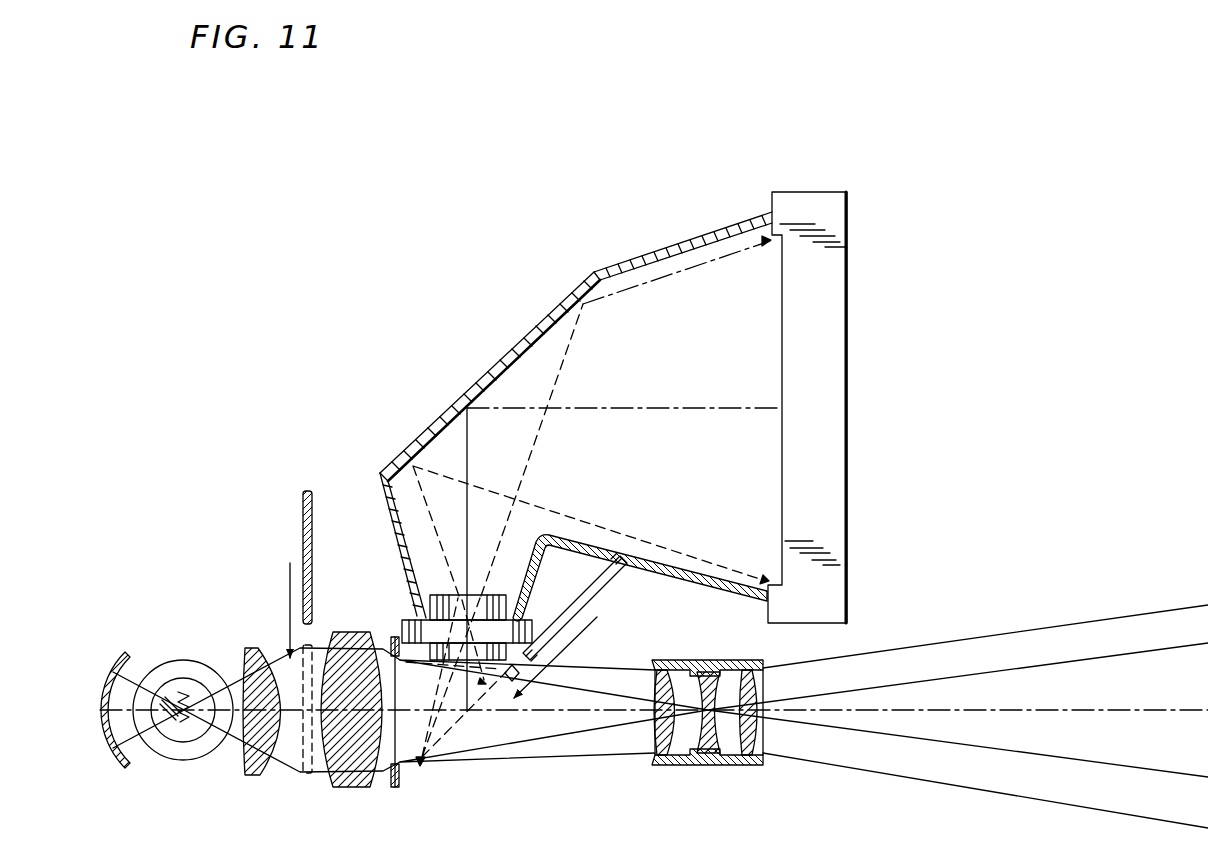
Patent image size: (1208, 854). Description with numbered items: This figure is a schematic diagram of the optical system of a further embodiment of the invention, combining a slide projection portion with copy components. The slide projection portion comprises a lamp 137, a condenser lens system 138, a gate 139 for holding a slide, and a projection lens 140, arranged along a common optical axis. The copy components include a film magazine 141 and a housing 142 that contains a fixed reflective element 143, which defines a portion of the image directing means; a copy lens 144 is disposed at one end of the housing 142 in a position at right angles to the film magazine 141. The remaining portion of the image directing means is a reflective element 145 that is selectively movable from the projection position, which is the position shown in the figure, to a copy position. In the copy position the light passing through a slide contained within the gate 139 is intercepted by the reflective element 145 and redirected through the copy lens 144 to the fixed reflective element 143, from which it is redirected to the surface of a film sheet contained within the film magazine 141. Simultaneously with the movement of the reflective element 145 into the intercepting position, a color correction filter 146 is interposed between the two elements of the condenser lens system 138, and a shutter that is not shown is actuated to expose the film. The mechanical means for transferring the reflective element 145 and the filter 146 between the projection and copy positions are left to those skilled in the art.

The lamp 137 is at (187, 743).
The condenser lens system 138 is at (263, 773).
The gate 139 is at (401, 791).
The projection lens 140 is at (705, 766).
The film magazine 141 is at (840, 388).
The housing 142 is at (644, 255).
The fixed reflective element 143 is at (517, 360).
The copy lens 144 is at (490, 590).
The movable reflective element 145 is at (610, 588).
The color correction filter 146 is at (307, 491).